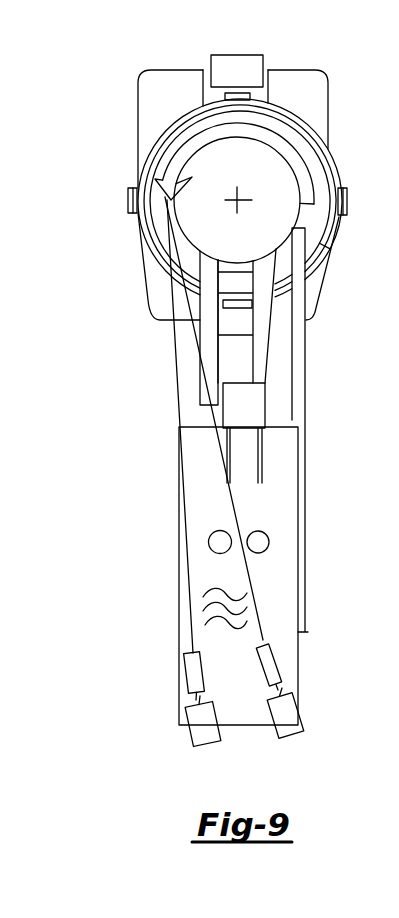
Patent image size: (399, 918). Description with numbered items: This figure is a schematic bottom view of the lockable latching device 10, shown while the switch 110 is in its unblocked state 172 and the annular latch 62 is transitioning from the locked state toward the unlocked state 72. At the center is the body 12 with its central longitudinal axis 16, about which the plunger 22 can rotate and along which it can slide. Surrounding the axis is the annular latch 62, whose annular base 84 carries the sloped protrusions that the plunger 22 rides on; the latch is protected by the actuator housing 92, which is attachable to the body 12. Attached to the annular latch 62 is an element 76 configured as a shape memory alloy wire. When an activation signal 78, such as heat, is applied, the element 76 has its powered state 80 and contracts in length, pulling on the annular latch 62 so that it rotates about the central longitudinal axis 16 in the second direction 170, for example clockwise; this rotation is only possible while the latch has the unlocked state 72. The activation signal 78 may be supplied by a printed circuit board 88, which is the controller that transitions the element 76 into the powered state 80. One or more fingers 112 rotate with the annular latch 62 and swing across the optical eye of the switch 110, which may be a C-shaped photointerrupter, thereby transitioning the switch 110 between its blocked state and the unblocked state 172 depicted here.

The lockable latching device 10 is at (78, 51).
The body 12 is at (138, 120).
The central longitudinal axis 16 is at (240, 197).
The plunger 22 is at (187, 203).
The annular latch 62 is at (160, 163).
The unlocked state 72 is at (122, 716).
The element 76 is at (218, 437).
The activation signal 78 is at (207, 612).
The powered state 80 is at (122, 716).
The annular base 84 is at (311, 155).
The printed circuit board 88 is at (245, 727).
The actuator housing 92 is at (185, 82).
The switch 110 is at (248, 400).
The fingers 112 is at (202, 393).
The second direction 170 is at (267, 138).
The unblocked state 172 is at (144, 531).